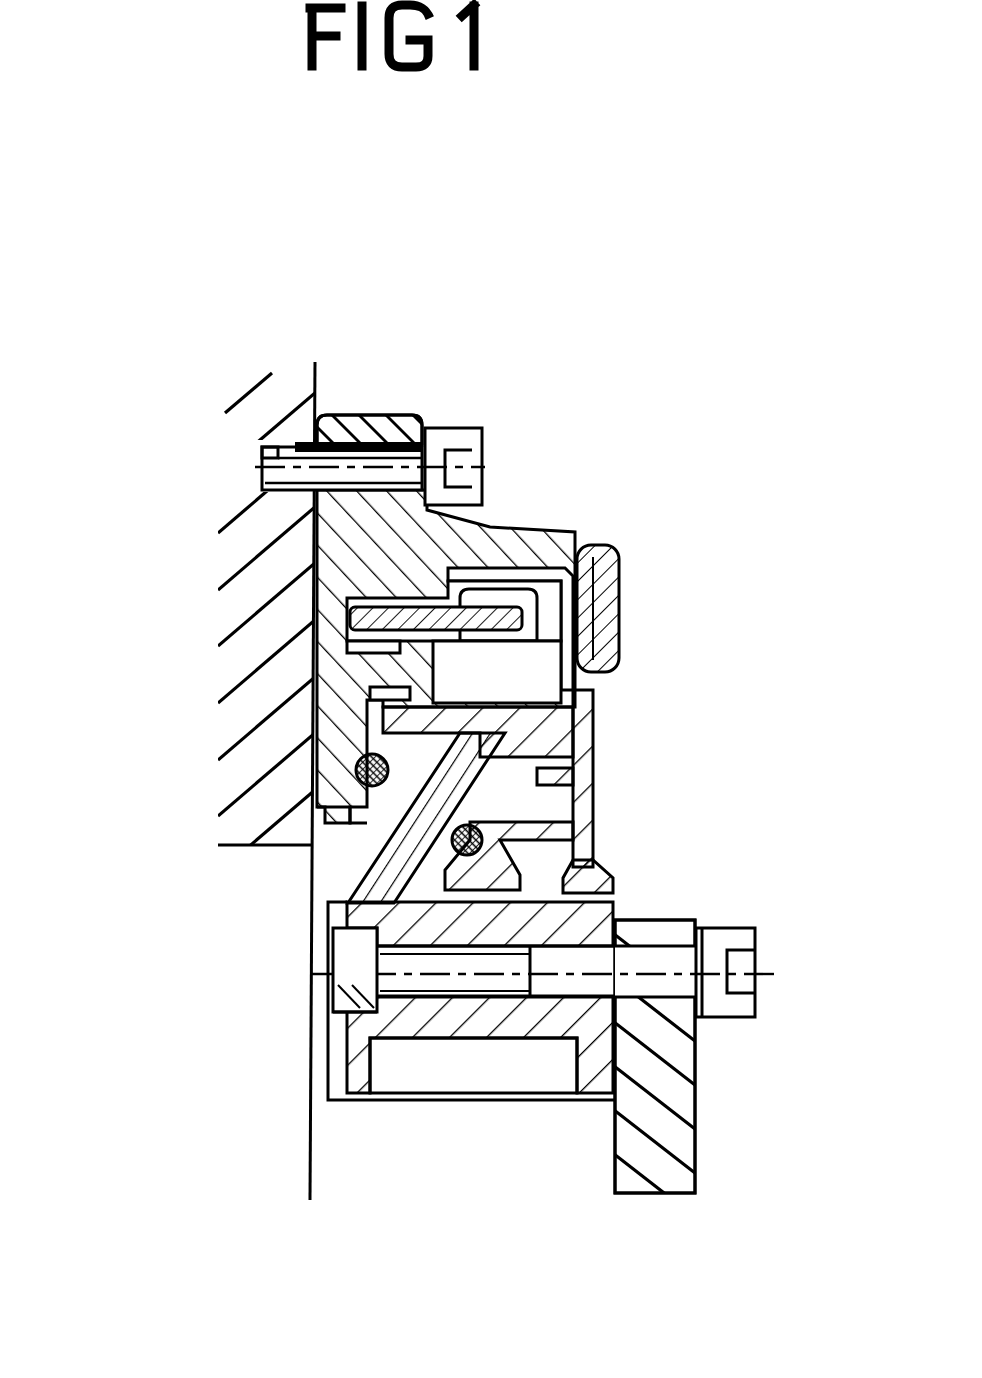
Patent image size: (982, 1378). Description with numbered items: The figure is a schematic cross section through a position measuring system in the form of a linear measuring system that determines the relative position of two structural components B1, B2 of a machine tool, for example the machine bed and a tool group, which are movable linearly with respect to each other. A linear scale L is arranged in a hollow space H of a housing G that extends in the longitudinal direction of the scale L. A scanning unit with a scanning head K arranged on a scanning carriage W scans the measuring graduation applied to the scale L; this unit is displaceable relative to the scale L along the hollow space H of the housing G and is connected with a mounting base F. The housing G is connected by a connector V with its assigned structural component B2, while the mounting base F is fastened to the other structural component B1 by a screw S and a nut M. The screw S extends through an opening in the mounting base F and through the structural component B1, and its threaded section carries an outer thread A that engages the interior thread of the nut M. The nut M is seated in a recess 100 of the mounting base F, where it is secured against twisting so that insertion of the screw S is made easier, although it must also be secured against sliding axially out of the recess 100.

The connector V is at (374, 442).
The housing G is at (481, 586).
The scanning head K is at (500, 573).
The linear scale L is at (350, 612).
The hollow space H is at (414, 677).
The scanning carriage W is at (537, 686).
The structural component B2 is at (352, 803).
The nut M is at (330, 958).
The recess 100 is at (322, 1010).
The outer thread A is at (410, 1040).
The screw S is at (495, 985).
The mounting base F is at (346, 1100).
The structural component B1 is at (664, 1121).